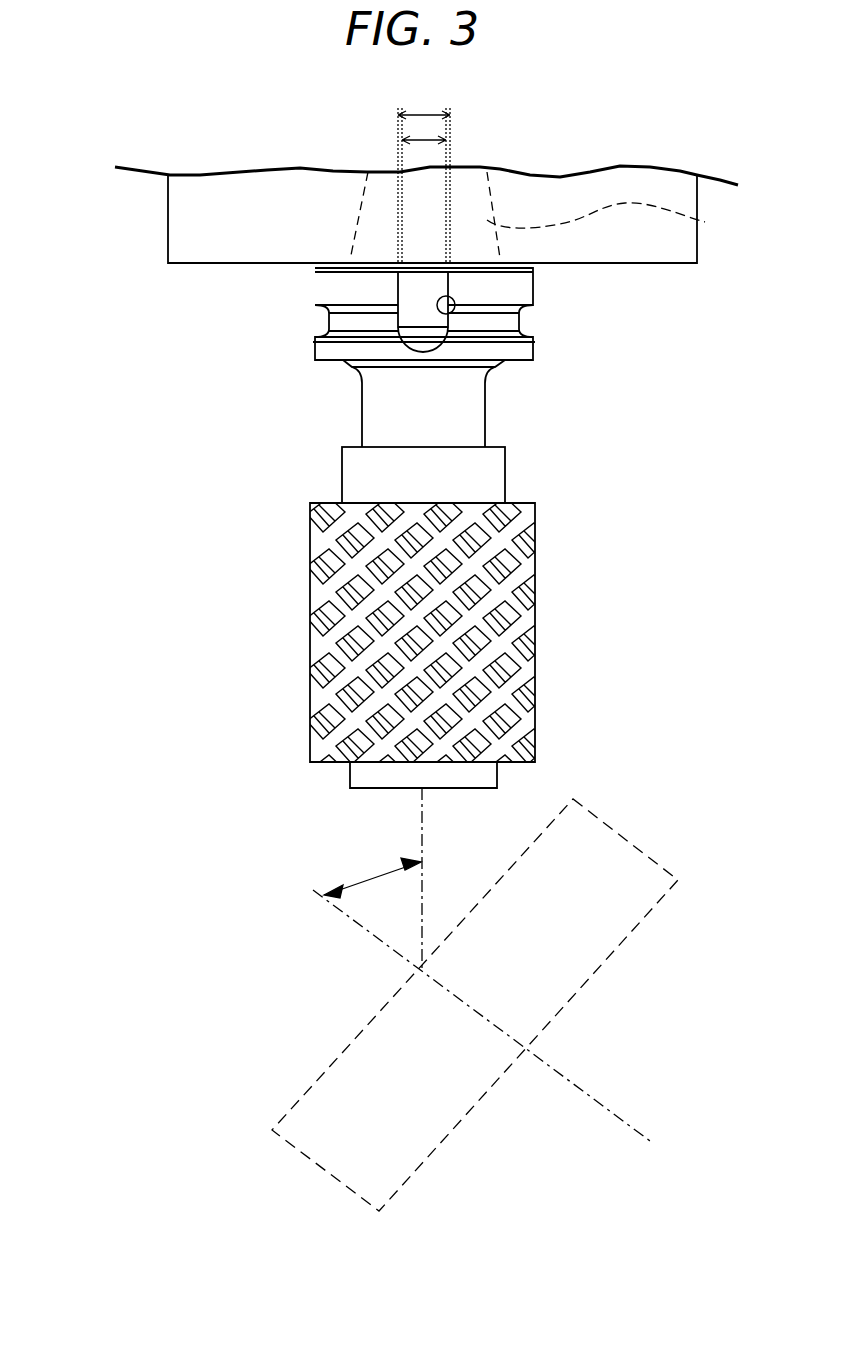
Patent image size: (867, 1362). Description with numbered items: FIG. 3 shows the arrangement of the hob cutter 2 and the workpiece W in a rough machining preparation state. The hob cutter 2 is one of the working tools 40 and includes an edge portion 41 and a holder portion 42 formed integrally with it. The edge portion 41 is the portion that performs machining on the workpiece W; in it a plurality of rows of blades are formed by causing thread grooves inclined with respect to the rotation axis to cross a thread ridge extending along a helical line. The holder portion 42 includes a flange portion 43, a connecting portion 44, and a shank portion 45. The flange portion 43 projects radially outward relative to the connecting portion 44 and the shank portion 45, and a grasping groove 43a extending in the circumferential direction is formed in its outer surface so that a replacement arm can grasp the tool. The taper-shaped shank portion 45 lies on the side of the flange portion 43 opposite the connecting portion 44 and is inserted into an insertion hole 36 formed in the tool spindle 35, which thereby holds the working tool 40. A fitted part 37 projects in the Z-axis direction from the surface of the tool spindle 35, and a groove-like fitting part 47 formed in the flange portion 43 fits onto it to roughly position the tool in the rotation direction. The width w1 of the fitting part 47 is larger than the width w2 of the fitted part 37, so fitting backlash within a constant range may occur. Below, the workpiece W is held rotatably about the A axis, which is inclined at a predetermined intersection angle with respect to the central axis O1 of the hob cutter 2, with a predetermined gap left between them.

The hob cutter 2 is at (230, 765).
The working tool 40 is at (400, 558).
The tool spindle 35 is at (177, 243).
The insertion hole 36 is at (368, 172).
The fitted part 37 is at (432, 278).
The edge portion 41 is at (575, 628).
The holder portion 42 is at (583, 412).
The flange portion 43 is at (325, 290).
The grasping groove 43a is at (327, 317).
The connecting portion 44 is at (357, 468).
The shank portion 45 is at (705, 222).
The fitting part 47 is at (530, 322).
The width of the fitting part w1 is at (430, 110).
The width of the fitted part w2 is at (427, 136).
The central axis of the hob cutter O1 is at (422, 813).
The workpiece W is at (315, 1085).
The A axis A is at (578, 1084).